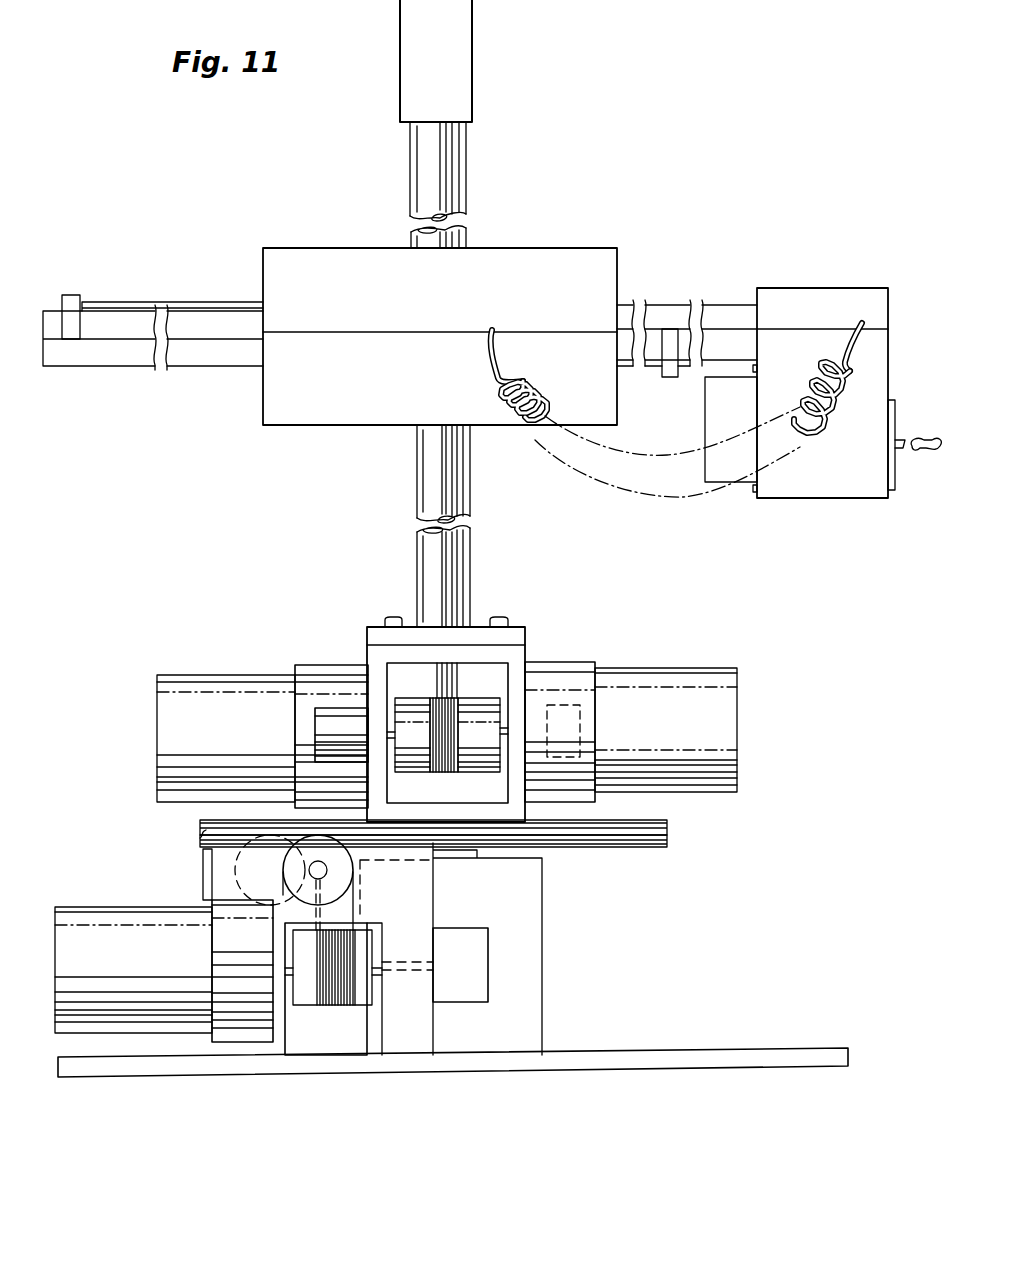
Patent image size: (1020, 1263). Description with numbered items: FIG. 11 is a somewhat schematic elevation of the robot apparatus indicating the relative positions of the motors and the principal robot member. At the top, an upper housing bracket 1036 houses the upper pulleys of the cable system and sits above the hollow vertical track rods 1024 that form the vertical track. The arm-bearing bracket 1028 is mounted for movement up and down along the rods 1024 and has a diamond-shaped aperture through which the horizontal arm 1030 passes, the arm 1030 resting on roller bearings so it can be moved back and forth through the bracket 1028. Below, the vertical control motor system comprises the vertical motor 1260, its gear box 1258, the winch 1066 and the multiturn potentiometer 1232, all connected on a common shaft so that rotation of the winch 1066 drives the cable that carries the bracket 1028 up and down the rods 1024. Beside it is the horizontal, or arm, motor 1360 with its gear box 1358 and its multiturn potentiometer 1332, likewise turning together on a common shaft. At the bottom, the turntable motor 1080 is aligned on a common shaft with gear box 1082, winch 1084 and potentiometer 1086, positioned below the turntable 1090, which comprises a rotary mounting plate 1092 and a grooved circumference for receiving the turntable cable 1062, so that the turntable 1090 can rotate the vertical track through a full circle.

The upper housing bracket 1036 is at (474, 48).
The vertical track rods 1024 is at (441, 158).
The arm-bearing bracket 1028 is at (545, 257).
The arm 1030 is at (132, 323).
The horizontal (arm) motor 1360 is at (226, 697).
The gear box 1358 is at (332, 687).
The multiturn potentiometer 1232 is at (350, 720).
The winch 1066 is at (483, 712).
The multiturn potentiometer 1332 is at (549, 697).
The gear box 1258 is at (578, 697).
The vertical motor 1260 is at (677, 697).
The rotary mounting plate 1092 is at (667, 822).
The turntable 1090 is at (630, 848).
The turntable cable 1062 is at (356, 895).
The winch 1084 is at (292, 958).
The potentiometer 1086 is at (485, 960).
The turntable motor 1080 is at (107, 925).
The gear box 1082 is at (256, 1032).